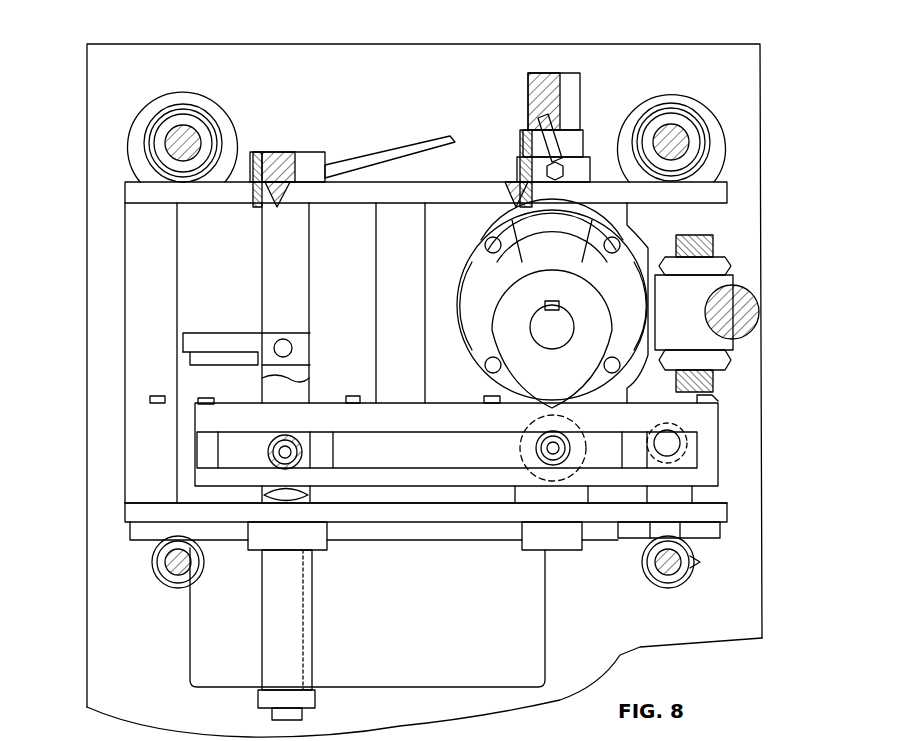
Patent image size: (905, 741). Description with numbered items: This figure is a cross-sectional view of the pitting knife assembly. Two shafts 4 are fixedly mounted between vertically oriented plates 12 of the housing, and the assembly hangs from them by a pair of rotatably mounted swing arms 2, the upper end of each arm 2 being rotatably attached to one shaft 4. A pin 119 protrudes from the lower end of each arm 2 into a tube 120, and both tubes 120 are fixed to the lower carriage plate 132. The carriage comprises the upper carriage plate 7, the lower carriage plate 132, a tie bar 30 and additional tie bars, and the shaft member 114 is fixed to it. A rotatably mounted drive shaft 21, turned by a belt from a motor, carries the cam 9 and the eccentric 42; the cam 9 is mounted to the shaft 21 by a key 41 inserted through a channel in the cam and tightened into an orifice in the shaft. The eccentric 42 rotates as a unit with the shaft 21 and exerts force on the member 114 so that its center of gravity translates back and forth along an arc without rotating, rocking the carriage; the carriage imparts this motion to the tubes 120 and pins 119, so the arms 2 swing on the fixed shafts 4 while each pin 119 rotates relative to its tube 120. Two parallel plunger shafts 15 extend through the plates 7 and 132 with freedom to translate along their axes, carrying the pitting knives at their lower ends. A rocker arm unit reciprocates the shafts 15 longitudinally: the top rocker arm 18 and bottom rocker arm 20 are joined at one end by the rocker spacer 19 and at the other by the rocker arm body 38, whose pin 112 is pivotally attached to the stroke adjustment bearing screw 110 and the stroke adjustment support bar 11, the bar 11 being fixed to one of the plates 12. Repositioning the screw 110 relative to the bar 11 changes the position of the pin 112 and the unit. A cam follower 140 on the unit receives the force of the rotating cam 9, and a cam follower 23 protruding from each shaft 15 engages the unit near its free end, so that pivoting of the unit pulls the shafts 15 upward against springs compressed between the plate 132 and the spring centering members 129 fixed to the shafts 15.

The plate 12 is at (122, 40).
The swing arm 2 is at (136, 118).
The shaft 4 is at (186, 106).
The shaft member 114 is at (570, 78).
The upper carriage plate 7 is at (336, 194).
The plunger shaft 15 is at (280, 258).
The tie bar 30 is at (160, 300).
The spring centering member 129 is at (180, 338).
The top rocker arm 18 is at (186, 412).
The rocker spacer 19 is at (192, 438).
The cam follower 23 is at (262, 452).
The bottom rocker arm 20 is at (188, 479).
The eccentric 42 is at (522, 242).
The key 41 is at (543, 303).
The drive shaft 21 is at (578, 304).
The stroke adjustment support bar 11 is at (700, 292).
The cam 9 is at (552, 309).
The cam follower 140 is at (568, 430).
The rocker arm body 38 is at (535, 448).
The stroke adjustment bearing screw 110 is at (720, 445).
The pin 112 is at (688, 452).
The lower carriage plate 132 is at (122, 522).
The tube 120 is at (152, 572).
The pin 119 is at (170, 578).